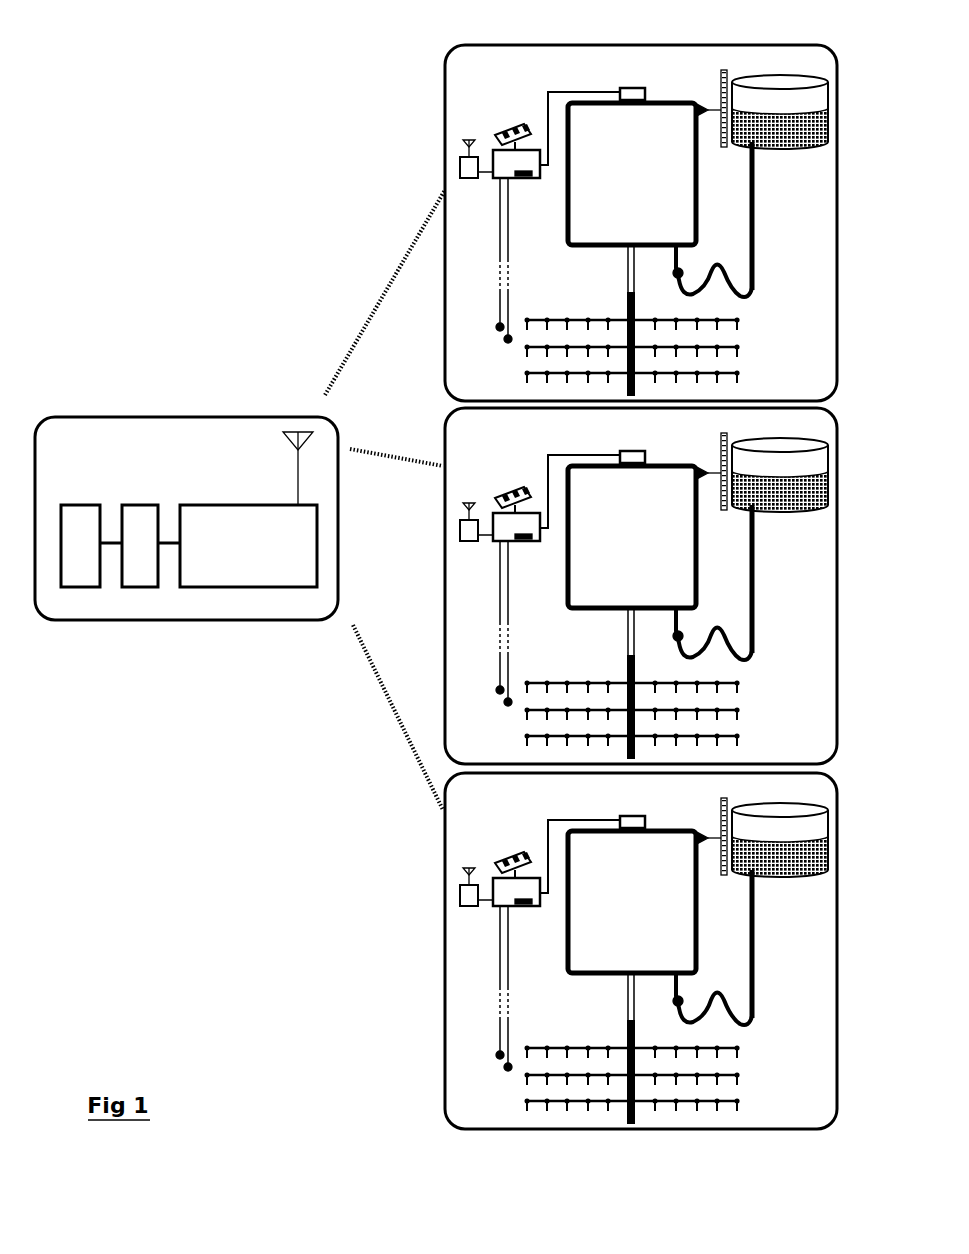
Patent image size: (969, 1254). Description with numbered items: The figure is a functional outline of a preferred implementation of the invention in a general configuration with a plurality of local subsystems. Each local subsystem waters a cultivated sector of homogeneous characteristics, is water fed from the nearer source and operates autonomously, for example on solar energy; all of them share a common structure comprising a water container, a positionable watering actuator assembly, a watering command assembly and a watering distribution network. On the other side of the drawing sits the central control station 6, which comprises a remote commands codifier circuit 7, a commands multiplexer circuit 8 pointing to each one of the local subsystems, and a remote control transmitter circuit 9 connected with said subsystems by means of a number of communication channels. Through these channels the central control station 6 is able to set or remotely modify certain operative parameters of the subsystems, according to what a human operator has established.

The central control station 6 is at (186, 518).
The remote commands codifier circuit 7 is at (80, 546).
The commands multiplexer circuit 8 is at (140, 546).
The remote control transmitter circuit 9 is at (248, 546).